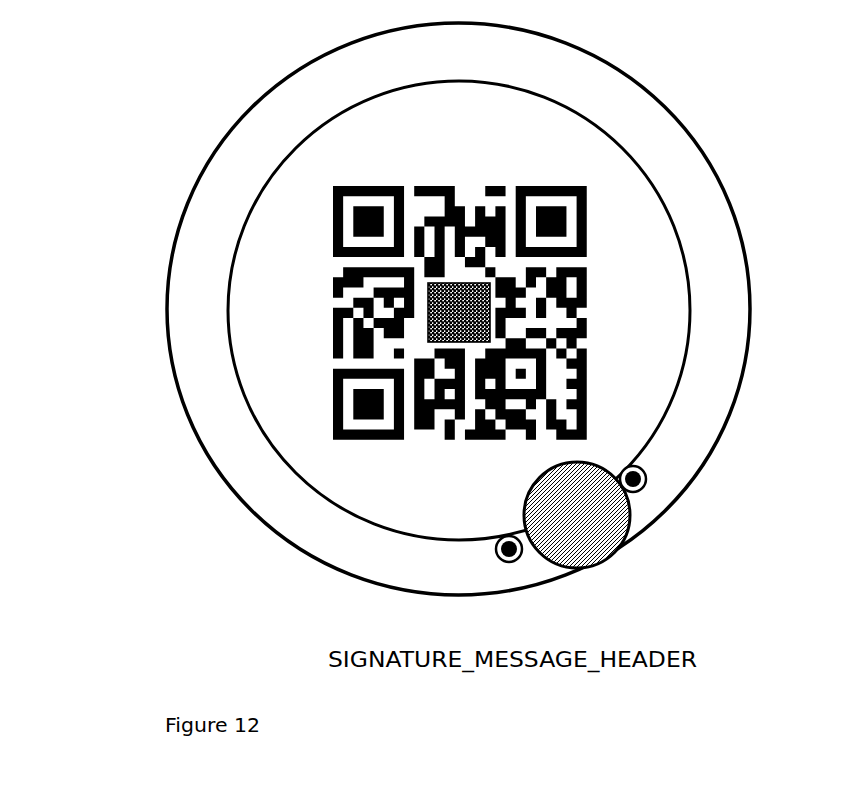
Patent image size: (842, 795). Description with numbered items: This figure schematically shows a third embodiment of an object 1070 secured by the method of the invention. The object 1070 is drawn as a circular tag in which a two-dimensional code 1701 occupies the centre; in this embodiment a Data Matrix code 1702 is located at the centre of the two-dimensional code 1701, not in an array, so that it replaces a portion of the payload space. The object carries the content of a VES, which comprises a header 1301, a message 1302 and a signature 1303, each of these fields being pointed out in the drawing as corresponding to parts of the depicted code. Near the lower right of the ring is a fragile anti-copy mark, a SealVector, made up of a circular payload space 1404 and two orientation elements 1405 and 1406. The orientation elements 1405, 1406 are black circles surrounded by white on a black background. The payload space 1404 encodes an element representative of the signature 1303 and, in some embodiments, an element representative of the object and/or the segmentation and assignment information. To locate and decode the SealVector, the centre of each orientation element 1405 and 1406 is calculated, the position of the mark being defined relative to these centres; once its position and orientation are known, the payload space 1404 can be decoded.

The circular tag / label with QR code 1070 is at (177, 118).
The QR code 1701 is at (427, 439).
The center region of QR code 1702 is at (470, 322).
The circular payload space 1404 is at (586, 556).
The orientation element 1405 is at (643, 494).
The orientation element 1406 is at (515, 561).
The header 1301 is at (452, 443).
The message 1302 is at (375, 510).
The signature 1303 is at (598, 599).